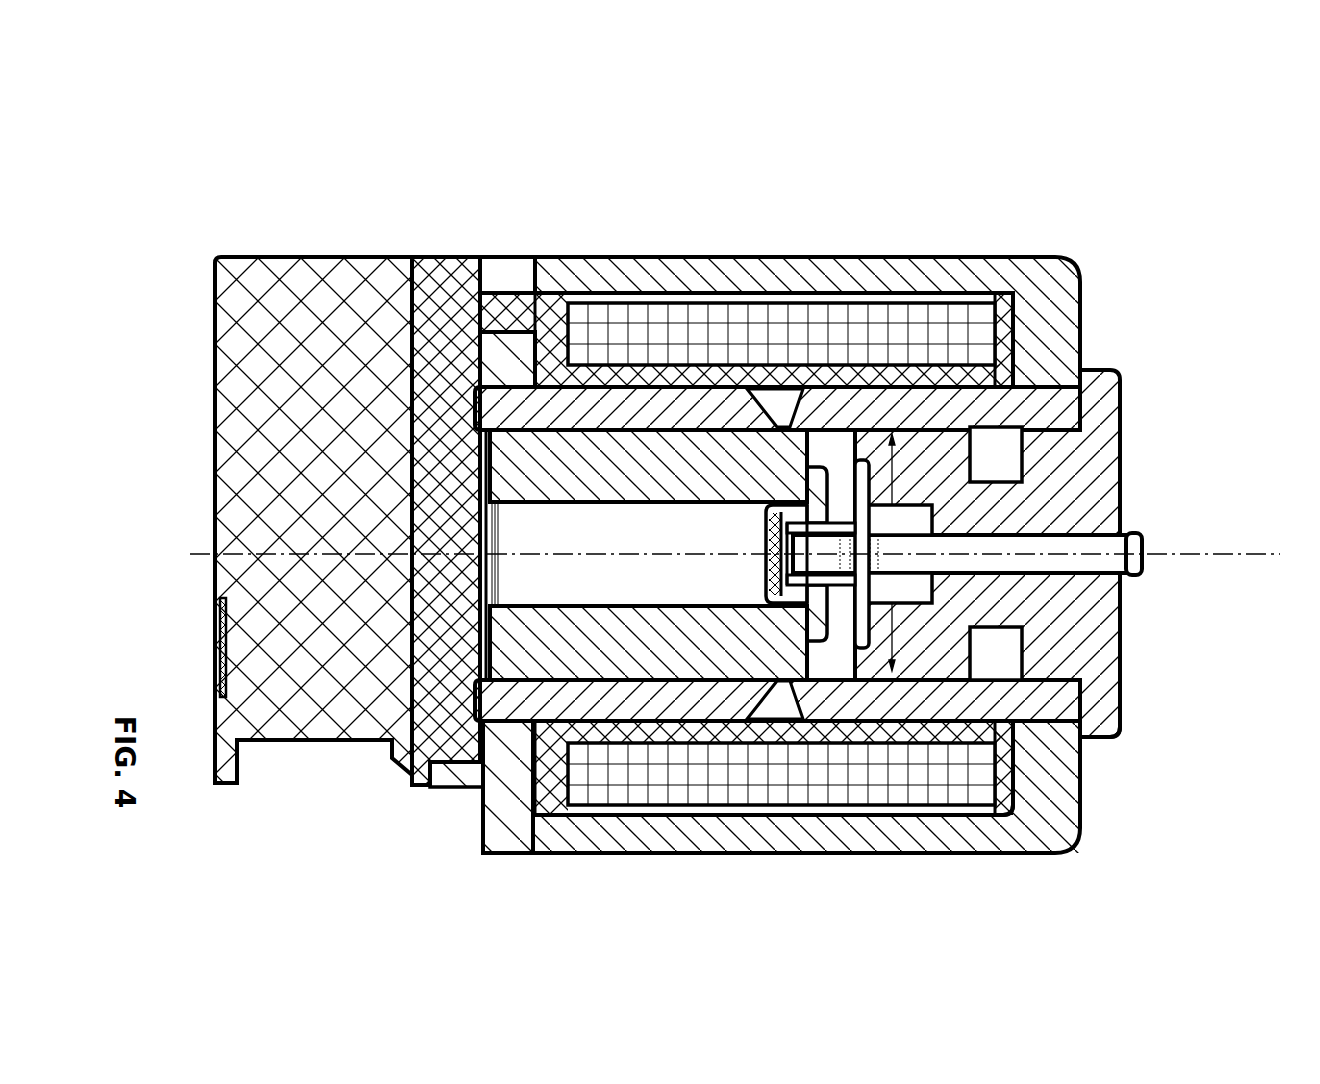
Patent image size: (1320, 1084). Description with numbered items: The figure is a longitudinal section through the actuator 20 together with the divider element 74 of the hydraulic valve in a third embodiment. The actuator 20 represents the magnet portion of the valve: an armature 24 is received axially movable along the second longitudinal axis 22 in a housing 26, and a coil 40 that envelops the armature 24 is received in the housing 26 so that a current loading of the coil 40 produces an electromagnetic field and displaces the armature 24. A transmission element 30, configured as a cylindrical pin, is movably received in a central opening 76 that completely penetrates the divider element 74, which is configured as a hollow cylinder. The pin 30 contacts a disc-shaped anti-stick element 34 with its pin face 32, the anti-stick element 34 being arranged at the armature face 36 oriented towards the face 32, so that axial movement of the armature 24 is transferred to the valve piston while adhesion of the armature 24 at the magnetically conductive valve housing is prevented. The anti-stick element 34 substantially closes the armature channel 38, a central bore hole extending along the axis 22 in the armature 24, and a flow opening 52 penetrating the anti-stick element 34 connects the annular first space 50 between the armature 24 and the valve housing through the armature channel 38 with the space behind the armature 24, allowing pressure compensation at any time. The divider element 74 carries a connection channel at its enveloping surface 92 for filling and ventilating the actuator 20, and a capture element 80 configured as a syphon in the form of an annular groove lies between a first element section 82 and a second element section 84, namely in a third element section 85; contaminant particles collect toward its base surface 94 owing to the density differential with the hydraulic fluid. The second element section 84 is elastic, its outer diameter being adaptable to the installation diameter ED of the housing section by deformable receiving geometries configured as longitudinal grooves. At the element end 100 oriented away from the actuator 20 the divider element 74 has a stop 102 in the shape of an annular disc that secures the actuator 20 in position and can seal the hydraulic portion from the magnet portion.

The actuator 20 is at (1083, 212).
The second longitudinal axis 22 is at (1272, 548).
The armature 24 is at (592, 423).
The housing 26 is at (644, 272).
The transmission element 30 is at (1142, 537).
The pin face 32 is at (776, 590).
The anti-stick element 34 is at (763, 563).
The armature face 36 is at (818, 455).
The armature channel 38 is at (642, 541).
The coil 40 is at (716, 338).
The first space 50 is at (849, 462).
The flow opening 52 is at (782, 527).
The divider element 74 is at (1122, 418).
The central opening 76 is at (1140, 562).
The capture element 80 is at (1009, 467).
The first element section 82 is at (1046, 640).
The second element section 84 is at (985, 620).
The third element section 85 is at (1000, 700).
The enveloping surface 92 is at (922, 426).
The base surface 94 is at (1036, 651).
The element end 100 is at (1123, 680).
The stop 102 is at (1105, 752).
The installation diameter ED is at (850, 612).